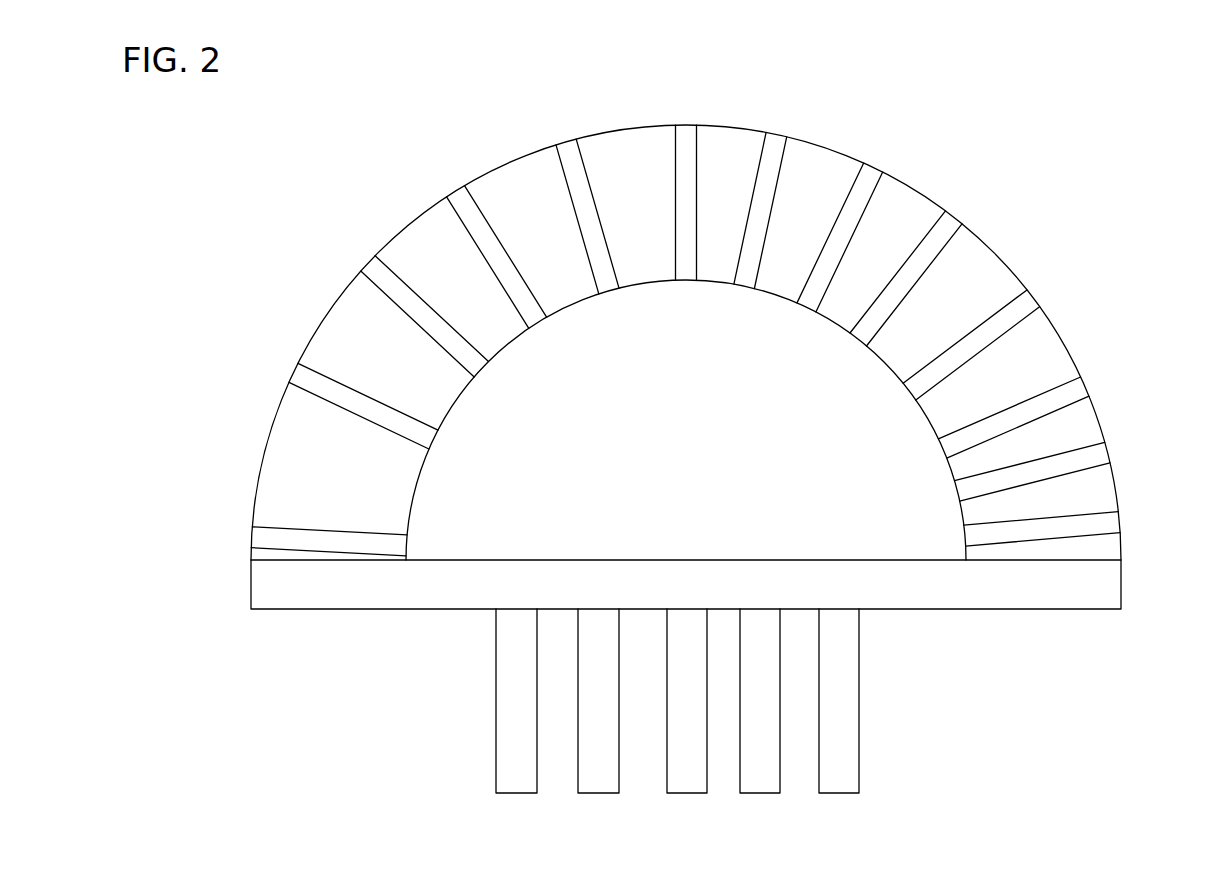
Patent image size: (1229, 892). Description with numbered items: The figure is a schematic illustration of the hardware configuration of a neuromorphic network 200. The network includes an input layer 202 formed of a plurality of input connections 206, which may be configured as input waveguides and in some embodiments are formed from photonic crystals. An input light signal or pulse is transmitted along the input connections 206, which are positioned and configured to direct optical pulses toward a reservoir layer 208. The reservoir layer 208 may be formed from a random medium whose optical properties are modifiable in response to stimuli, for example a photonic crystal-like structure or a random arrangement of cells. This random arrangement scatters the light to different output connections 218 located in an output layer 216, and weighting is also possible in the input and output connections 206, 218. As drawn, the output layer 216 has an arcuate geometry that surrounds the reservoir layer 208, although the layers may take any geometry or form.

The neuromorphic network 200 is at (392, 128).
The input layer 202 is at (683, 701).
The input connections 206 is at (691, 726).
The reservoir layer 208 is at (688, 465).
The output layer 216 is at (663, 334).
The output connections 218 is at (232, 548).